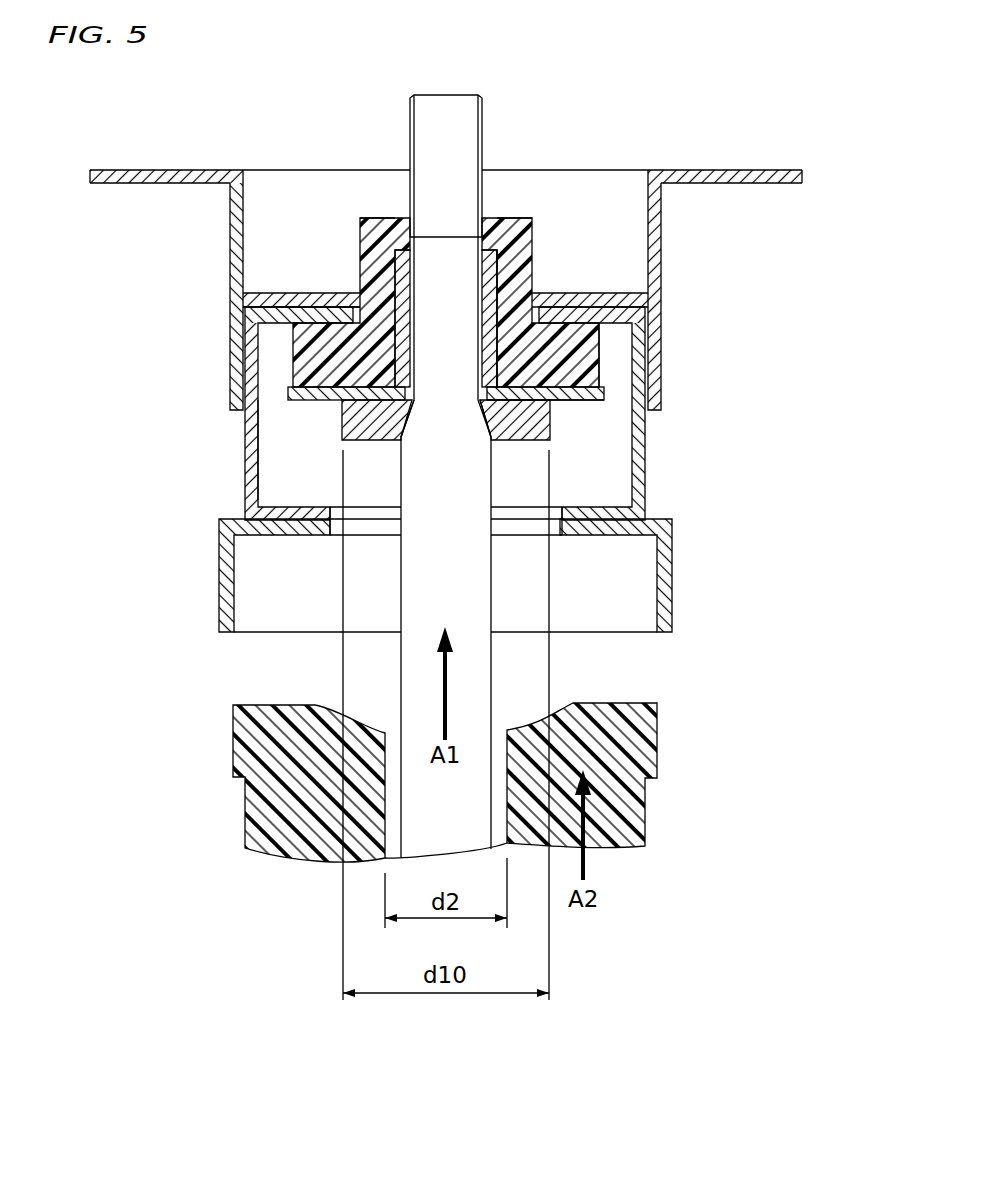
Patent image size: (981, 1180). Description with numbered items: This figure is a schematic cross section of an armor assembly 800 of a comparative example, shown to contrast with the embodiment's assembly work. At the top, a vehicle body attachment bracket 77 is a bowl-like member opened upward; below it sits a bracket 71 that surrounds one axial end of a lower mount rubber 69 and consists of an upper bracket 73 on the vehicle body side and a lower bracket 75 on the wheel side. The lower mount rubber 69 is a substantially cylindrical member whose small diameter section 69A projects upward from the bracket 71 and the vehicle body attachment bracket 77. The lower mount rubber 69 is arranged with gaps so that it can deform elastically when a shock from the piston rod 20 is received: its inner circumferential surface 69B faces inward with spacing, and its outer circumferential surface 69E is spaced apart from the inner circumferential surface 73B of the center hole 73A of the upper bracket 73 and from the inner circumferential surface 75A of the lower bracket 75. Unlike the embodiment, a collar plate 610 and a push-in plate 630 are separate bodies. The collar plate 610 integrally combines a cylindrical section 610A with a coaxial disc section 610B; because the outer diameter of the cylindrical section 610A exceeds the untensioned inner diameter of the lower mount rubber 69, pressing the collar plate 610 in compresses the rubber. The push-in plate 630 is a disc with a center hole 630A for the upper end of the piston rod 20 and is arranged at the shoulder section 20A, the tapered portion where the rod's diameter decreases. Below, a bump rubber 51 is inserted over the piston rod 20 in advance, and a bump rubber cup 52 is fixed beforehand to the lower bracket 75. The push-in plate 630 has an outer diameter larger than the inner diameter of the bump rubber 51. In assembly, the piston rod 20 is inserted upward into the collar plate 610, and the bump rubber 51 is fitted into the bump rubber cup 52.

The armor assembly 800 is at (702, 125).
The vehicle body attachment bracket 77 is at (168, 170).
The bracket 71 is at (370, 361).
The upper bracket 73 is at (390, 290).
The center hole 73A is at (356, 338).
The inner circumferential surface 73B is at (355, 298).
The lower bracket 75 is at (386, 429).
The inner circumferential surface 75A is at (258, 454).
The lower mount rubber 69 is at (444, 280).
The small diameter section 69A is at (520, 218).
The inner circumferential surface 69B is at (392, 268).
The outer circumferential surface 69E is at (582, 388).
The collar plate 610 is at (546, 316).
The cylindrical section 610A is at (500, 277).
The disc section 610B is at (596, 380).
The push-in plate 630 is at (571, 461).
The center hole 630A is at (500, 452).
The piston rod 20 is at (583, 476).
The shoulder section 20A is at (548, 435).
The bump rubber cup 52 is at (672, 566).
The bump rubber 51 is at (657, 733).